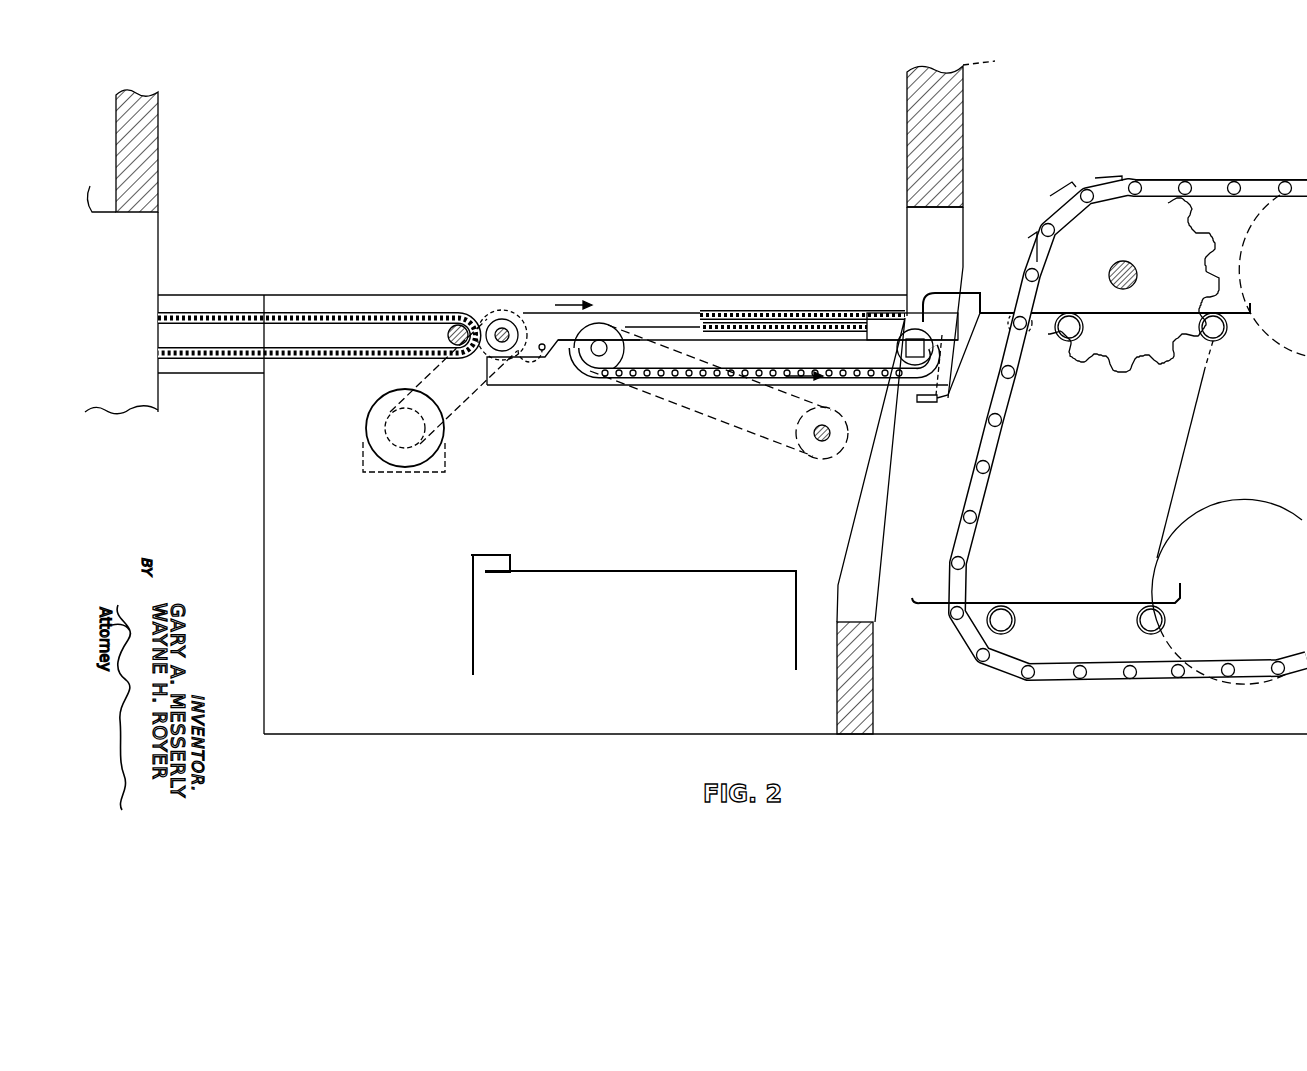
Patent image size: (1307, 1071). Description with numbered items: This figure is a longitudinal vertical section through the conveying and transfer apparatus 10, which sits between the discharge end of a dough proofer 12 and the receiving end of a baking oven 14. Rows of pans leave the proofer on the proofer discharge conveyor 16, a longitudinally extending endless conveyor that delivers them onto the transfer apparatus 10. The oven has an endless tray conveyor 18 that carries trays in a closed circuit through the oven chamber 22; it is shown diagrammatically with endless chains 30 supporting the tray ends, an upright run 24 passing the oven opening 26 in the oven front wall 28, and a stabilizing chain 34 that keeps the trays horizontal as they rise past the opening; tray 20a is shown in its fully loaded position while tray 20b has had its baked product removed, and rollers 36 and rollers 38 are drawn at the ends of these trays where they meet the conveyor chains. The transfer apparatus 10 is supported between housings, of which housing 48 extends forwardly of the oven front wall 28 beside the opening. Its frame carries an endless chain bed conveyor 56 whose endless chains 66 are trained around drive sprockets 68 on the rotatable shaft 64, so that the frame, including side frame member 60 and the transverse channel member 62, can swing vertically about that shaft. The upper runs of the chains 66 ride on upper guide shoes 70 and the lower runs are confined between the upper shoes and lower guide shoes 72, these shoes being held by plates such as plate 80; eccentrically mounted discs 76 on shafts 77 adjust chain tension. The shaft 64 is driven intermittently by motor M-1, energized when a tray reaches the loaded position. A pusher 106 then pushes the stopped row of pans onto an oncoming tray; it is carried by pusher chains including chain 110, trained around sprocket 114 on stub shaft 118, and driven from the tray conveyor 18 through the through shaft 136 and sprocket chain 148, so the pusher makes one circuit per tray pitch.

The conveying and transfer apparatus 10 is at (600, 286).
The dough proofer 12 is at (166, 150).
The baking oven 14 is at (899, 133).
The proofer discharge conveyor 16 is at (246, 312).
The endless tray conveyor 18 is at (1202, 172).
The tray 20a is at (1105, 320).
The tray 20b is at (1113, 605).
The oven chamber 22 is at (1208, 432).
The upright run 24 is at (1034, 445).
The oven opening 26 is at (907, 228).
The oven front wall 28 is at (907, 155).
The endless chains 30 is at (1156, 179).
The stabilizing chain 34 is at (1233, 400).
The roller 36 is at (1075, 341).
The roller 38 is at (1225, 338).
The housing 48 is at (395, 530).
The endless chain bed conveyor 56 is at (735, 305).
The side frame member 60 is at (578, 386).
The channel member 62 is at (927, 401).
The rotatable shaft 64 is at (499, 333).
The endless chains 66 is at (849, 312).
The drive sprockets 68 is at (520, 318).
The upper guide shoes 70 is at (757, 312).
The lower guide shoes 72 is at (798, 324).
The eccentrically mounted discs 76 is at (530, 359).
The shafts 77 is at (542, 352).
The plate 80 is at (664, 325).
The pusher 106 is at (946, 292).
The endless chain 110 is at (647, 378).
The sprocket 114 is at (620, 342).
The stub shaft 118 is at (603, 345).
The through shaft 136 is at (820, 442).
The sprocket chain 148 is at (710, 408).
The motor M-1 is at (364, 428).